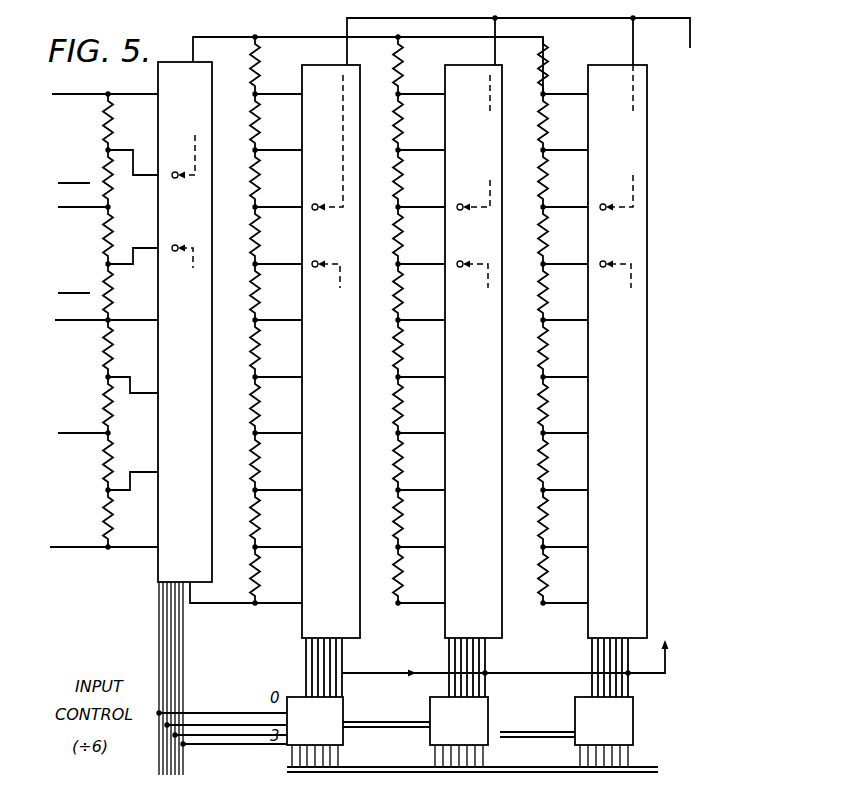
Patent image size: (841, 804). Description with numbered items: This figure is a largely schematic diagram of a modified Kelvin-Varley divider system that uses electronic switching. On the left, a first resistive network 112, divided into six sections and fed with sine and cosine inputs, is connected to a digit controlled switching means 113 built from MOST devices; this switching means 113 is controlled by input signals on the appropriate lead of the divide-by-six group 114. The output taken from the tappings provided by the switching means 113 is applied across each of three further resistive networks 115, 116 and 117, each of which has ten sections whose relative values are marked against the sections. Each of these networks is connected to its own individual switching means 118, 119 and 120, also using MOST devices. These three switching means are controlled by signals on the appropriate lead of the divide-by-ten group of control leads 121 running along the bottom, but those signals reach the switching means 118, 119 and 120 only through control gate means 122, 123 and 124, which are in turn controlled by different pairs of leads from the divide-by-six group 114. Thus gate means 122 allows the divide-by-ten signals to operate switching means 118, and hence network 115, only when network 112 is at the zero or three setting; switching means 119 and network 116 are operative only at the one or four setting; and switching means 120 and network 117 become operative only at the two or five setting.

The first resistive network 112 is at (108, 94).
The switching means 113 is at (212, 73).
The divide-by-six group 114 is at (183, 632).
The further resistive network 115 is at (262, 68).
The further resistive network 116 is at (398, 606).
The further resistive network 117 is at (543, 606).
The switching means 118 is at (303, 619).
The switching means 119 is at (463, 73).
The switching means 120 is at (607, 72).
The divide-by-ten group of control leads 121 is at (393, 772).
The control gate means 122 is at (287, 742).
The control gate means 123 is at (430, 709).
The control gate means 124 is at (575, 706).